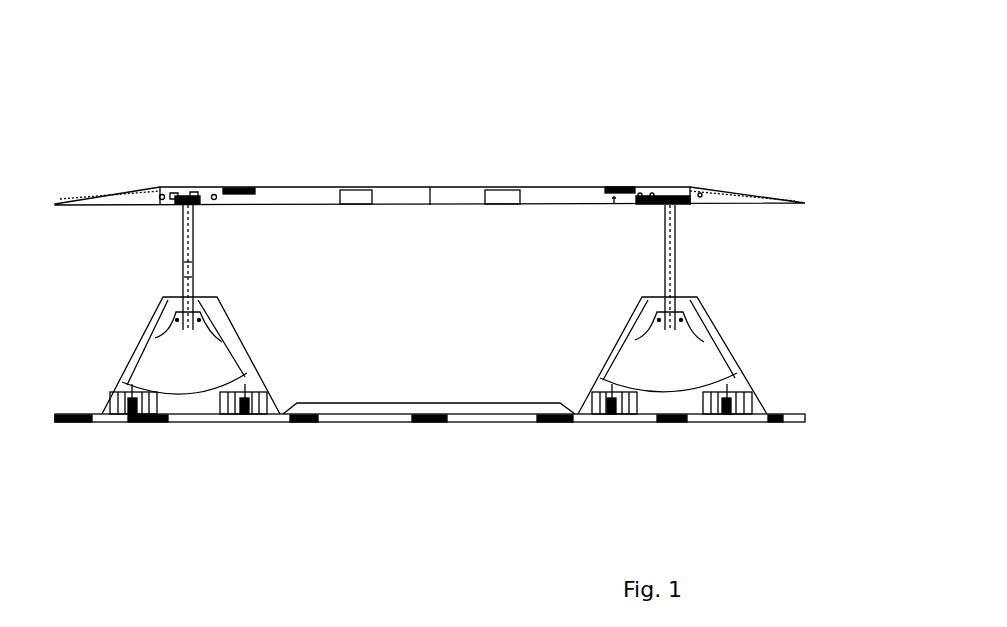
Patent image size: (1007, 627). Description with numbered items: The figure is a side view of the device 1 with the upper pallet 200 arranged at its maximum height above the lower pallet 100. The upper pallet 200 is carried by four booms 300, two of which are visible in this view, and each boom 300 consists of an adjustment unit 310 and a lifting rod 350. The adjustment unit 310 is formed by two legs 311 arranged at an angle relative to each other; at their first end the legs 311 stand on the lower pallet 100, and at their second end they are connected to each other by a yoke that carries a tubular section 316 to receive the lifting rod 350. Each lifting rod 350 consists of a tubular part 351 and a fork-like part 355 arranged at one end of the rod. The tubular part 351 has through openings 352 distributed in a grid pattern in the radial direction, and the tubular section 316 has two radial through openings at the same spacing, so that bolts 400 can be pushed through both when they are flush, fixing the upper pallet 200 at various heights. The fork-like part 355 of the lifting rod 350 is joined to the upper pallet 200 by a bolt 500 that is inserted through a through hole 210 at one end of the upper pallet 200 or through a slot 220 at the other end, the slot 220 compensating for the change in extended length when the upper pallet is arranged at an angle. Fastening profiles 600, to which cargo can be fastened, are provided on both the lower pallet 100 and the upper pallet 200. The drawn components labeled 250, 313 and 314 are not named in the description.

The device 1 is at (439, 146).
The lower pallet 100 is at (378, 410).
The upper pallet 200 is at (405, 187).
The through hole 210 is at (183, 186).
The slot 220 is at (685, 188).
The opening in platform plate 250 is at (348, 189).
The boom 300 is at (745, 289).
The adjustment unit 310 is at (741, 347).
The legs 311 is at (140, 345).
The right foot 313 is at (750, 393).
The left foot 314 is at (100, 400).
The tubular section 316 is at (655, 318).
The lifting rod 350 is at (677, 245).
The tubular part 351 is at (194, 262).
The through openings 352 is at (194, 277).
The fork-like part 355 is at (170, 186).
The bolts 400 is at (185, 318).
The bolt 500 is at (192, 186).
The fastening profiles 600 is at (238, 188).